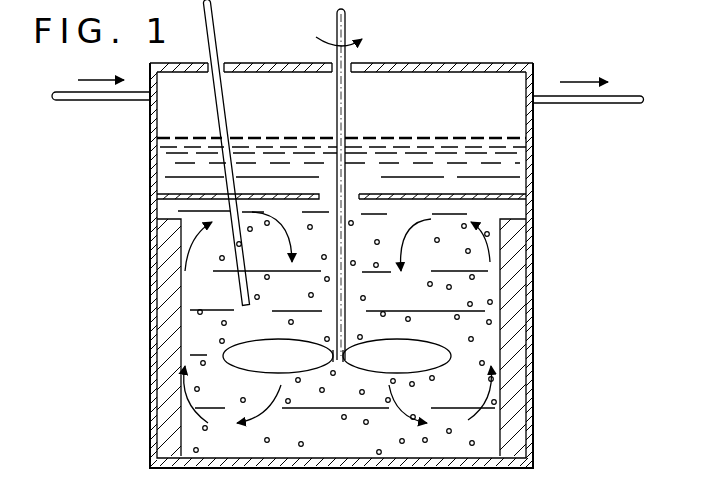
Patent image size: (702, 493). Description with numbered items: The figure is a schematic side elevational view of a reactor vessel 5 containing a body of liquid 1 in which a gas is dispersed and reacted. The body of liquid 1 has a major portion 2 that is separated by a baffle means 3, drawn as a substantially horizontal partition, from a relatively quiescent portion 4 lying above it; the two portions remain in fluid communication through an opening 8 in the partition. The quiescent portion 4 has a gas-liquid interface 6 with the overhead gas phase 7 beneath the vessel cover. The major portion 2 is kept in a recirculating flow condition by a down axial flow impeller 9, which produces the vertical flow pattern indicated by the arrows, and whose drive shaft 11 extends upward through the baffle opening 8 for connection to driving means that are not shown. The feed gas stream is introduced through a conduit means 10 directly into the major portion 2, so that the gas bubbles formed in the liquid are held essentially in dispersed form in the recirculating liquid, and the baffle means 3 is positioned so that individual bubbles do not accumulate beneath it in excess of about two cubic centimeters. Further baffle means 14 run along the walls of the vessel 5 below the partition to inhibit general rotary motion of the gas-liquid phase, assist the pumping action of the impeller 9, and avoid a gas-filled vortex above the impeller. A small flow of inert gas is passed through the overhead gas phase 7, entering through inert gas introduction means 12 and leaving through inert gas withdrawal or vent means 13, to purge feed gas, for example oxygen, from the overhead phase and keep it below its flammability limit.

The body of liquid 1 is at (500, 211).
The major portion 2 is at (462, 356).
The baffle means 3 is at (498, 193).
The quiescent portion 4 is at (165, 170).
The reactor vessel 5 is at (150, 240).
The gas-liquid interface 6 is at (518, 138).
The overhead gas phase 7 is at (482, 93).
The opening 8 is at (351, 202).
The down axial flow impeller 9 is at (263, 363).
The conduit means 10 is at (225, 45).
The drive shaft 11 is at (346, 107).
The inert gas introduction means 12 is at (113, 103).
The inert gas withdrawal means 13 is at (565, 103).
The baffle means 14 is at (170, 338).